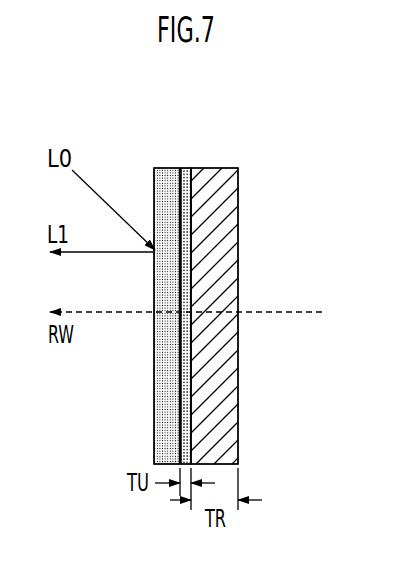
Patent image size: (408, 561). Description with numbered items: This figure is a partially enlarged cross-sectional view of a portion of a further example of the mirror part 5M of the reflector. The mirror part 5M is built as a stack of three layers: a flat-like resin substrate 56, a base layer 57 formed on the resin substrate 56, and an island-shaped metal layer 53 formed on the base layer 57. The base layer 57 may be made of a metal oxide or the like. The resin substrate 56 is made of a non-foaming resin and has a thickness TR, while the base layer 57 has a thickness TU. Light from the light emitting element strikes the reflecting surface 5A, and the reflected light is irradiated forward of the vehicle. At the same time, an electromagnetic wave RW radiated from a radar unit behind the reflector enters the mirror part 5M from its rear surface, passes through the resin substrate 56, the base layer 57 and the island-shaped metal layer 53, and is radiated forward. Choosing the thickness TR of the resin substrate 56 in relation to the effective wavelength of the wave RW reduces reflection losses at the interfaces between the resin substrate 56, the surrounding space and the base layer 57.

The reflecting surface 5A is at (171, 271).
The mirror part 5M is at (190, 271).
The island-shaped metal layer 53 is at (162, 168).
The base layer 57 is at (183, 168).
The resin substrate 56 is at (214, 292).